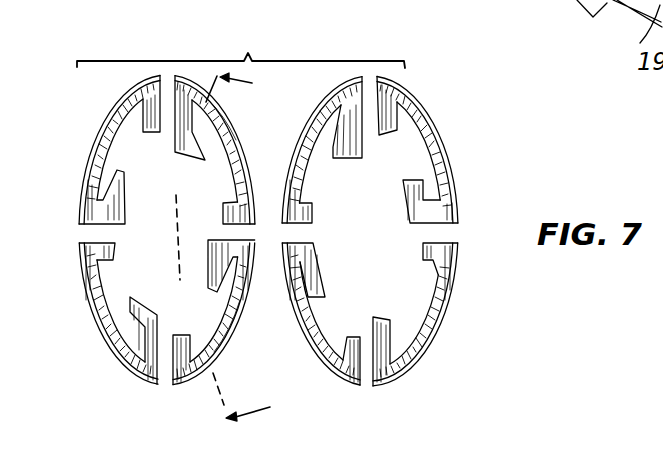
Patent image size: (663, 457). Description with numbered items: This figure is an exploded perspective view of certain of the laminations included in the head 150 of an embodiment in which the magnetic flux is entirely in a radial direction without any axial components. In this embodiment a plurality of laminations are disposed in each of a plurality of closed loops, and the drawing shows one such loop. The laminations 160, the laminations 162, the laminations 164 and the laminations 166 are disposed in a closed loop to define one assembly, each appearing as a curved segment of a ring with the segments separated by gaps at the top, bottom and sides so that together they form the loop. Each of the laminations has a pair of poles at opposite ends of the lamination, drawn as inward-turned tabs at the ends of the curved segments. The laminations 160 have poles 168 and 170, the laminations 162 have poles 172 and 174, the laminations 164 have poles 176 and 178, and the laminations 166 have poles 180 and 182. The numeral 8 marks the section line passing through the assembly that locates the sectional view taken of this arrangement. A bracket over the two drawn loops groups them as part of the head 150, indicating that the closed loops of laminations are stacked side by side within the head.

The head 150 is at (291, 50).
The section line 8- 8 is at (235, 247).
The laminations 160 is at (92, 172).
The laminations 162 is at (193, 360).
The laminations 164 is at (227, 345).
The laminations 166 is at (231, 131).
The pole 168 is at (132, 199).
The pole 170 is at (152, 138).
The pole 172 is at (155, 300).
The pole 174 is at (106, 252).
The pole 176 is at (208, 258).
The pole 178 is at (148, 382).
The pole 180 is at (192, 152).
The pole 182 is at (236, 203).